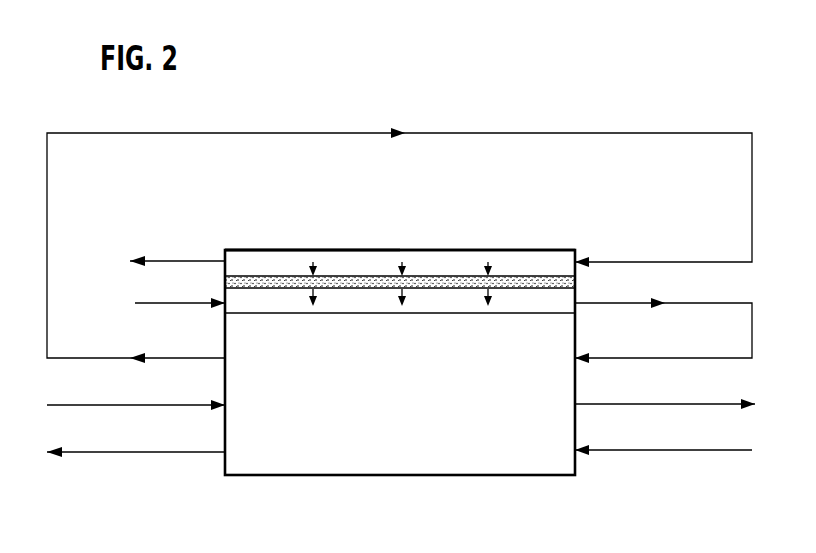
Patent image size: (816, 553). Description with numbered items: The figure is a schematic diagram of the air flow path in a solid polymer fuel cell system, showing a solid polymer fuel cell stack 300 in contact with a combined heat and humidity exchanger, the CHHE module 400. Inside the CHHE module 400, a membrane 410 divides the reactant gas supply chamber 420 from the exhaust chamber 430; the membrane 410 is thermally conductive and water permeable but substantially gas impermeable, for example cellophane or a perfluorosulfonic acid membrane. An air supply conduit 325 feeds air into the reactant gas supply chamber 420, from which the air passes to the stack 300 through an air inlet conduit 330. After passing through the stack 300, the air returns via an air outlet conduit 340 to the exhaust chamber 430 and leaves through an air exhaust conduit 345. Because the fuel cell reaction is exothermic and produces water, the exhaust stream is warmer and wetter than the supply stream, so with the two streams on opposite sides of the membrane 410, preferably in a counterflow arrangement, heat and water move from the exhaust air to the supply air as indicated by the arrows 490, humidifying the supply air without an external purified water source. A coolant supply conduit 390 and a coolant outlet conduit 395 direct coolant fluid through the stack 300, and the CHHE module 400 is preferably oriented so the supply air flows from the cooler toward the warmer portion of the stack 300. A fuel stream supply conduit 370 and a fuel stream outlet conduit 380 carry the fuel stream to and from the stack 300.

The solid polymer fuel cell stack 300 is at (375, 452).
The air supply conduit 325 is at (199, 302).
The air inlet conduit 330 is at (648, 359).
The air outlet conduit 340 is at (108, 355).
The air exhaust conduit 345 is at (202, 259).
The fuel stream supply conduit 370 is at (646, 451).
The fuel stream outlet conduit 380 is at (116, 453).
The coolant supply conduit 390 is at (102, 406).
The coolant outlet conduit 395 is at (647, 406).
The CHHE module 400 is at (248, 232).
The membrane 410 is at (225, 281).
The reactant gas supply chamber 420 is at (467, 305).
The exhaust chamber 430 is at (527, 266).
The arrows 490 is at (488, 263).